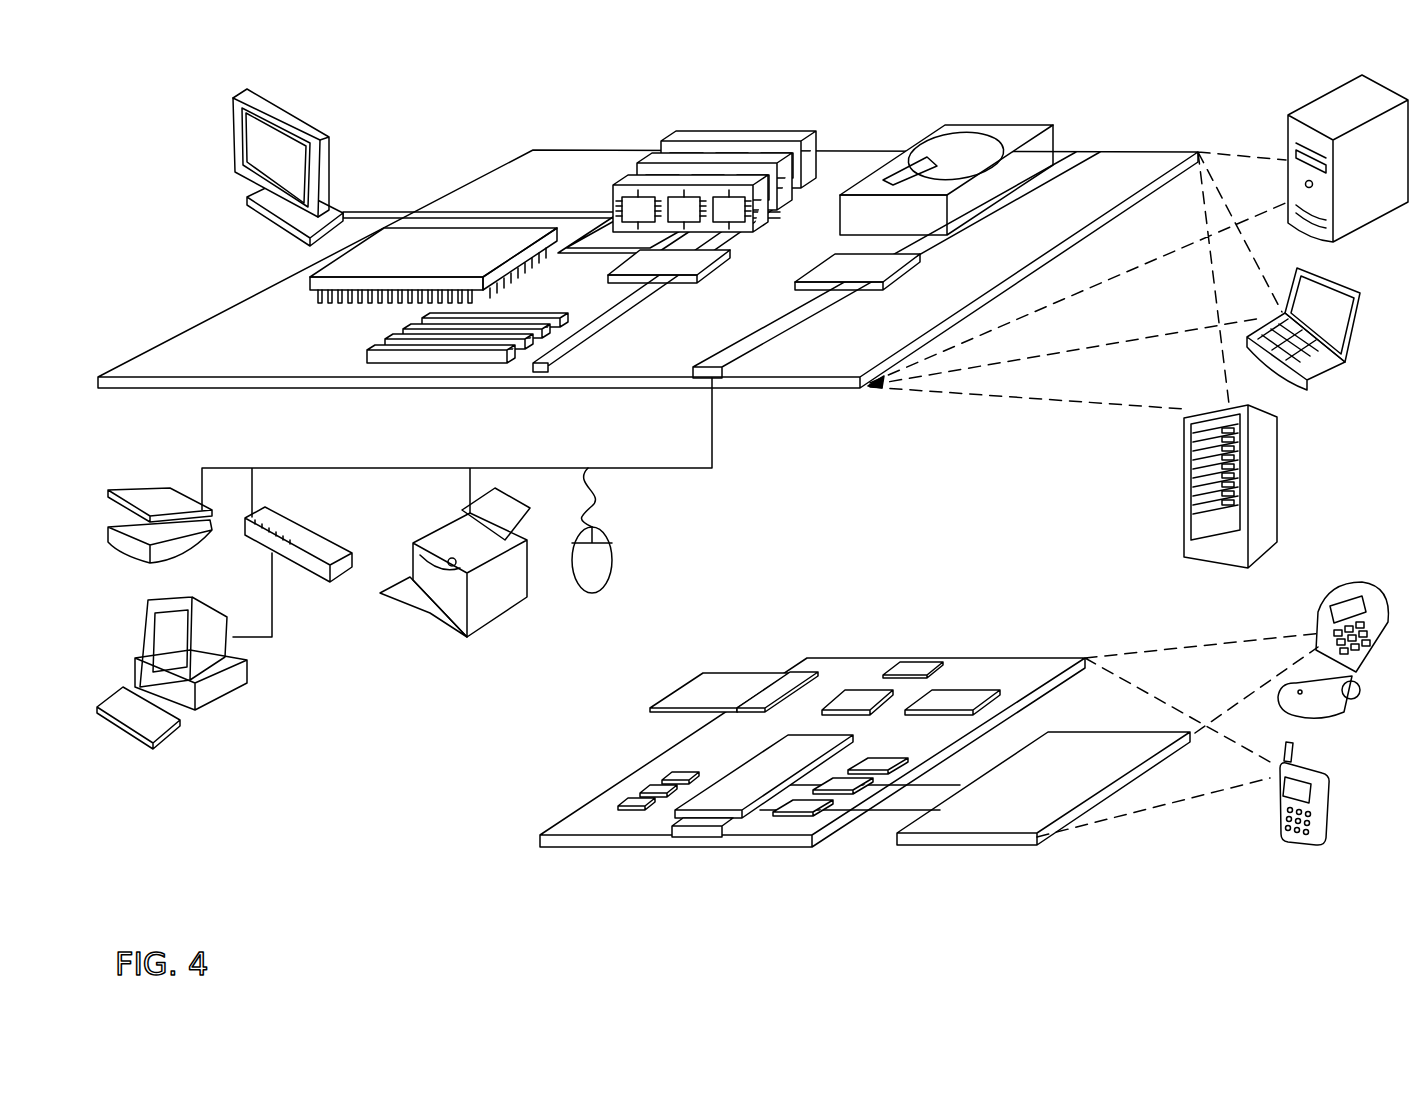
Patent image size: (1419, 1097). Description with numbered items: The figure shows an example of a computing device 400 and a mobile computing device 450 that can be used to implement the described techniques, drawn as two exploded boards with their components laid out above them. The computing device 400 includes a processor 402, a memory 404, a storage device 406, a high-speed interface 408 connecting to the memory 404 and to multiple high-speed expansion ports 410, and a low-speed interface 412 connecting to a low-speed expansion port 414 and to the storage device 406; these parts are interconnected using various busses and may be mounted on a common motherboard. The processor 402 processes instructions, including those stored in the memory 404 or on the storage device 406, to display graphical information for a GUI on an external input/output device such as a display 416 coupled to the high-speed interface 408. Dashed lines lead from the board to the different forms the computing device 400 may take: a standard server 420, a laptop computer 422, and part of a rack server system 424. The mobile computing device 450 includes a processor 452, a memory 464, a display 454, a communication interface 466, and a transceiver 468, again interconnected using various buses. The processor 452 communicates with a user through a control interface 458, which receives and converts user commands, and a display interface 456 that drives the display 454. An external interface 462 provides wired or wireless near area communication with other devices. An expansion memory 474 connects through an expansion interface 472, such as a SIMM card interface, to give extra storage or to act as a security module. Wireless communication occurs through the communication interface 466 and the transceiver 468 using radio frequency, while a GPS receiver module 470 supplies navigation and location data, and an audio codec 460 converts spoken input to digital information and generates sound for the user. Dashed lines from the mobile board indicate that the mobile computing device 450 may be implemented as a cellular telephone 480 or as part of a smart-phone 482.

The computing device 400 is at (450, 118).
The processor 402 is at (308, 281).
The memory 404 is at (672, 142).
The storage device 406 is at (948, 130).
The high-speed interface 408 is at (640, 260).
The high-speed expansion ports 410 is at (387, 346).
The low-speed interface 412 is at (830, 264).
The low-speed expansion port 414 is at (722, 378).
The display 416 is at (240, 96).
The standard server 420 is at (1288, 134).
The laptop computer 422 is at (1360, 300).
The rack server system 424 is at (1184, 513).
The mobile computing device 450 is at (512, 852).
The processor 452 is at (737, 800).
The display 454 is at (993, 820).
The display interface 456 is at (810, 808).
The control interface 458 is at (855, 790).
The audio codec 460 is at (877, 762).
The external interface 462 is at (697, 837).
The memory 464 is at (650, 795).
The communication interface 466 is at (868, 700).
The transceiver 468 is at (953, 700).
The GPS receiver module 470 is at (927, 662).
The expansion interface 472 is at (793, 670).
The expansion memory 474 is at (702, 678).
The cellular telephone 480 is at (1328, 612).
The smart-phone 482 is at (1272, 800).